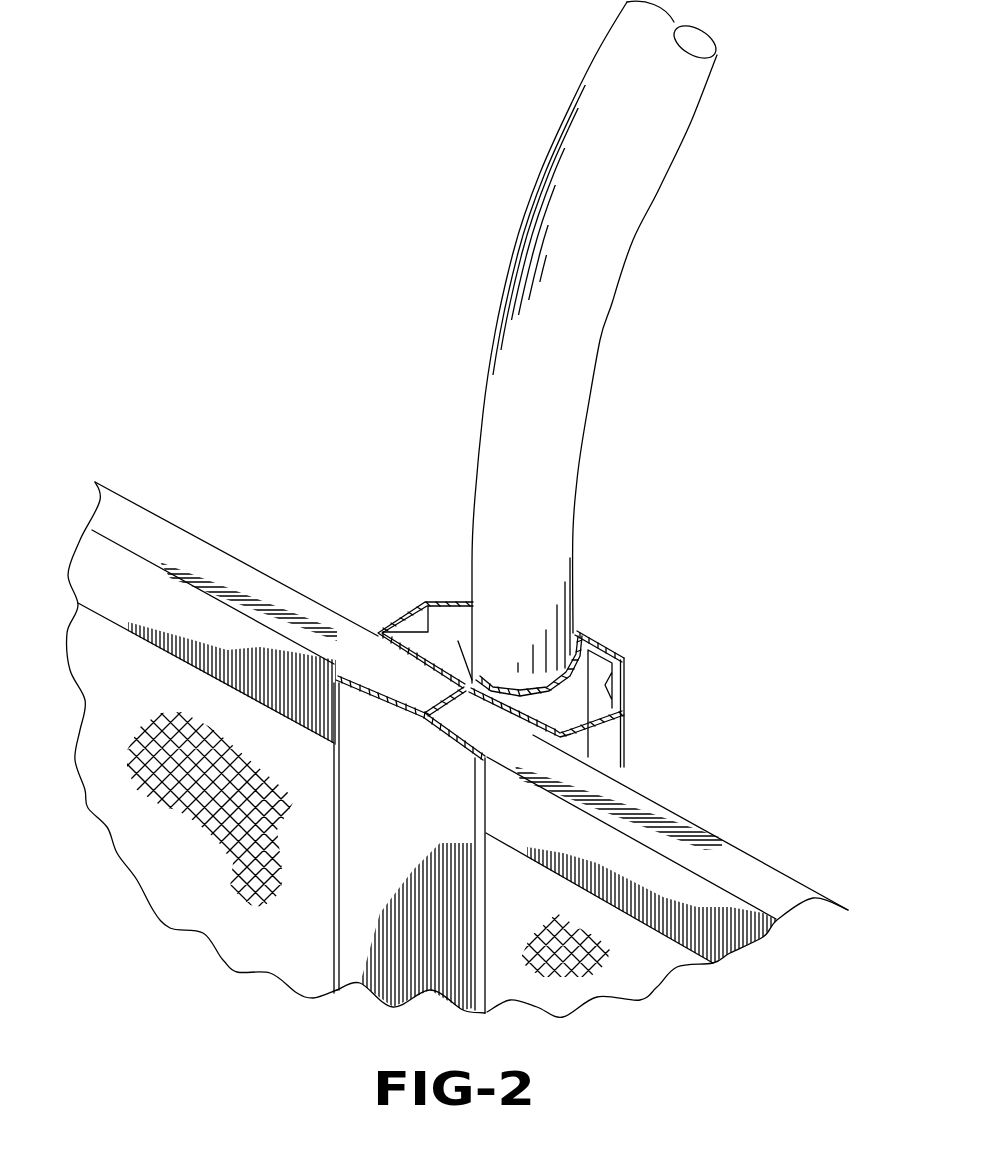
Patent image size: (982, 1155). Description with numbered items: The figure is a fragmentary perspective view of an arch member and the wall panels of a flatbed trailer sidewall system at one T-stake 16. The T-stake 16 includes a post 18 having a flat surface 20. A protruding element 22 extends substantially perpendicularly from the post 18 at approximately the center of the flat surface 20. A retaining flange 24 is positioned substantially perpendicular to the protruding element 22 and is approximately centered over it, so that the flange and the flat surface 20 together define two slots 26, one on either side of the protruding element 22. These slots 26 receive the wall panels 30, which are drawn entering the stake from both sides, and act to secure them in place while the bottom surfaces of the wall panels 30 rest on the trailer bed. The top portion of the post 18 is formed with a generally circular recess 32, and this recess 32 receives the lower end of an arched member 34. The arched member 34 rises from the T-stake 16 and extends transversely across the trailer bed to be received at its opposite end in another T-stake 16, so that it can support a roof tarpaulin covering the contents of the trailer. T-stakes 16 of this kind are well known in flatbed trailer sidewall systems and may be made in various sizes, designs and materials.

The T-stake 16 is at (507, 754).
The post 18 is at (602, 650).
The flat surface 20 is at (533, 733).
The protruding element 22 is at (431, 705).
The retaining flange 24 is at (420, 722).
The slots 26 is at (368, 708).
The wall panels 30 is at (137, 494).
The circular recess 32 is at (460, 643).
The arched member 34 is at (562, 505).